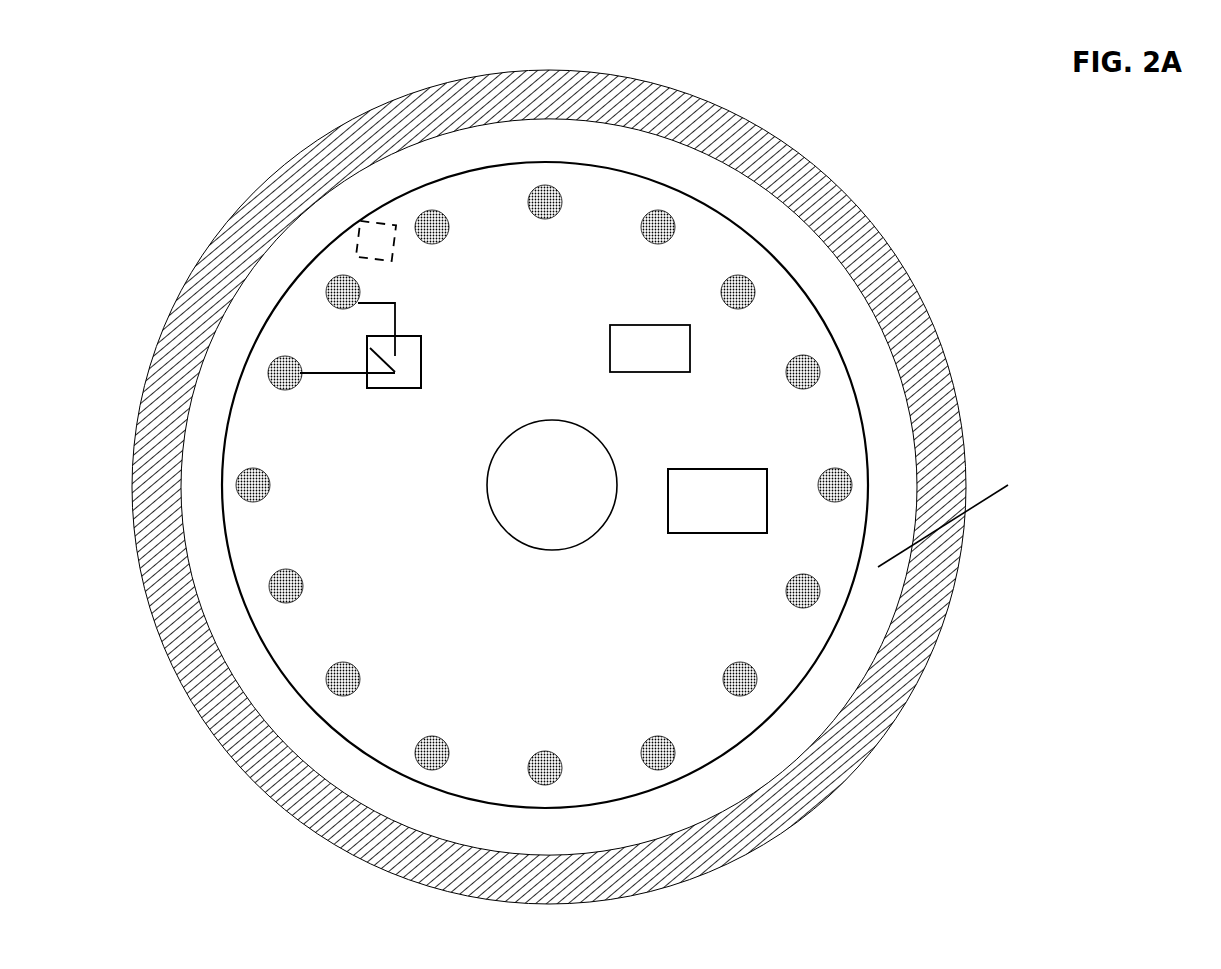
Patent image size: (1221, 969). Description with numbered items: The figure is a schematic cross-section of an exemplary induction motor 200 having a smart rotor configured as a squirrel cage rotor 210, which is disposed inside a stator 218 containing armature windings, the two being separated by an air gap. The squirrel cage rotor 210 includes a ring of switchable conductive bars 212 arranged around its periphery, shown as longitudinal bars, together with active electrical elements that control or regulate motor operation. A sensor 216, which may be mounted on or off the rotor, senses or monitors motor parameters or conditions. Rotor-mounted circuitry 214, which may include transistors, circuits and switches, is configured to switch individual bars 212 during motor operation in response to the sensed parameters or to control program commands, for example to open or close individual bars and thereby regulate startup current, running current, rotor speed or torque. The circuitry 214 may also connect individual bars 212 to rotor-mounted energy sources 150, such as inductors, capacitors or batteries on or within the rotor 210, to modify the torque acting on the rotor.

The induction motor 200 is at (1137, 241).
The stator 218 is at (232, 220).
The squirrel cage rotor 210 is at (654, 637).
The conductive bars 212 is at (270, 485).
The sensor 216 is at (388, 260).
The rotor-mounted circuitry 214 is at (670, 423).
The rotor-mounted energy sources 150 is at (717, 535).